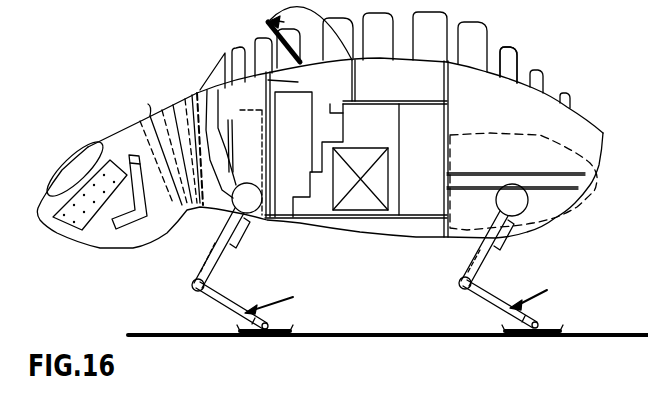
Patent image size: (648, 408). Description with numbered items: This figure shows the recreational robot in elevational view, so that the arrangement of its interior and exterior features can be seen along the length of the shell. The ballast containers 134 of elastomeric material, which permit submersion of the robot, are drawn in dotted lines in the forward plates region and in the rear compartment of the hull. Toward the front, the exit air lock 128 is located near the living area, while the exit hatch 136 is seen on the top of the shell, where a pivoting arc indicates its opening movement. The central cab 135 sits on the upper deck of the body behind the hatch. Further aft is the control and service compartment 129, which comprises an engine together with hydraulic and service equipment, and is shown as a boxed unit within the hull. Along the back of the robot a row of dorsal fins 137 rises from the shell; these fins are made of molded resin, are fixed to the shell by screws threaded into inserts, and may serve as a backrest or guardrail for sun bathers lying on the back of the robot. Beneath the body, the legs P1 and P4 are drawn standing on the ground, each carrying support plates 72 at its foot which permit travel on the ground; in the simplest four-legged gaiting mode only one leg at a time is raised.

The ballast containers 134 is at (156, 100).
The exit air lock 128 is at (200, 86).
The exit hatch 136 is at (266, 25).
The central cab 135 is at (413, 78).
The dorsal fins 137 is at (507, 67).
The control and service compartment 129 is at (360, 196).
The support plates 72 is at (243, 302).
The leg P1 is at (282, 300).
The leg P4 is at (519, 257).